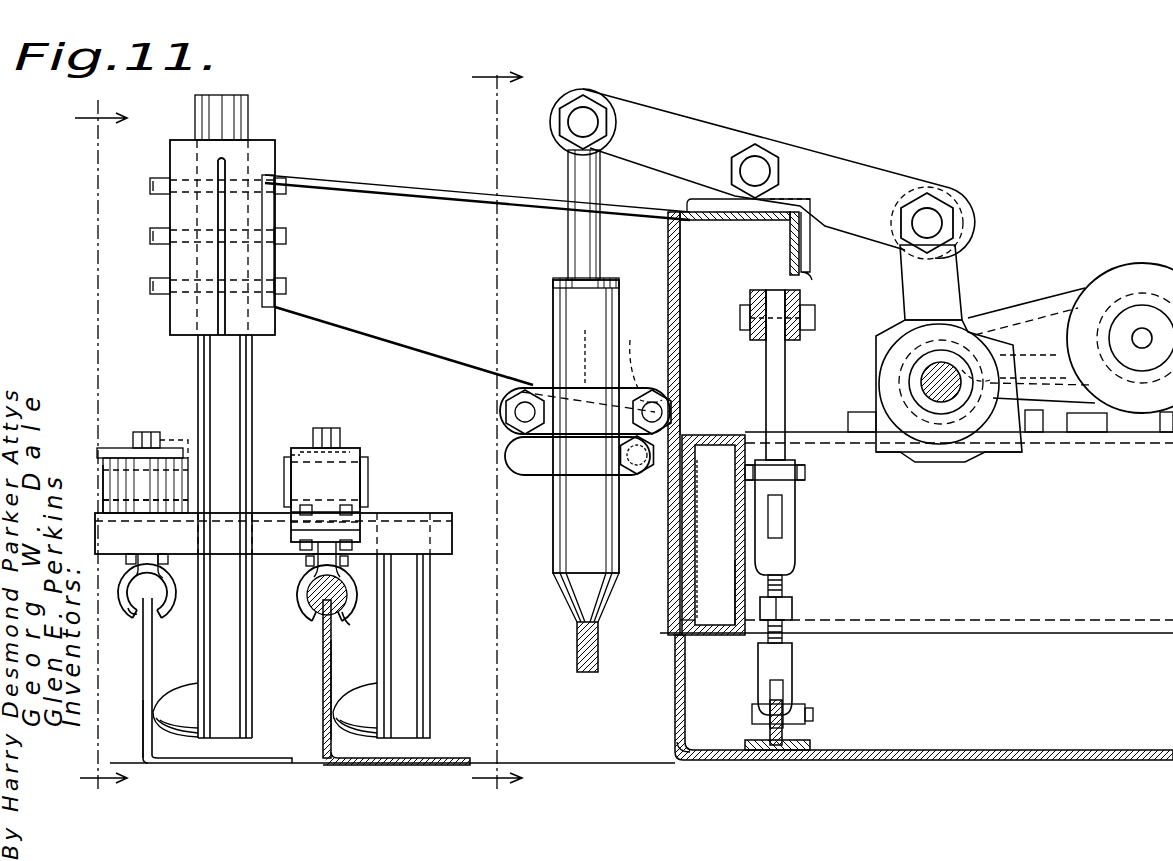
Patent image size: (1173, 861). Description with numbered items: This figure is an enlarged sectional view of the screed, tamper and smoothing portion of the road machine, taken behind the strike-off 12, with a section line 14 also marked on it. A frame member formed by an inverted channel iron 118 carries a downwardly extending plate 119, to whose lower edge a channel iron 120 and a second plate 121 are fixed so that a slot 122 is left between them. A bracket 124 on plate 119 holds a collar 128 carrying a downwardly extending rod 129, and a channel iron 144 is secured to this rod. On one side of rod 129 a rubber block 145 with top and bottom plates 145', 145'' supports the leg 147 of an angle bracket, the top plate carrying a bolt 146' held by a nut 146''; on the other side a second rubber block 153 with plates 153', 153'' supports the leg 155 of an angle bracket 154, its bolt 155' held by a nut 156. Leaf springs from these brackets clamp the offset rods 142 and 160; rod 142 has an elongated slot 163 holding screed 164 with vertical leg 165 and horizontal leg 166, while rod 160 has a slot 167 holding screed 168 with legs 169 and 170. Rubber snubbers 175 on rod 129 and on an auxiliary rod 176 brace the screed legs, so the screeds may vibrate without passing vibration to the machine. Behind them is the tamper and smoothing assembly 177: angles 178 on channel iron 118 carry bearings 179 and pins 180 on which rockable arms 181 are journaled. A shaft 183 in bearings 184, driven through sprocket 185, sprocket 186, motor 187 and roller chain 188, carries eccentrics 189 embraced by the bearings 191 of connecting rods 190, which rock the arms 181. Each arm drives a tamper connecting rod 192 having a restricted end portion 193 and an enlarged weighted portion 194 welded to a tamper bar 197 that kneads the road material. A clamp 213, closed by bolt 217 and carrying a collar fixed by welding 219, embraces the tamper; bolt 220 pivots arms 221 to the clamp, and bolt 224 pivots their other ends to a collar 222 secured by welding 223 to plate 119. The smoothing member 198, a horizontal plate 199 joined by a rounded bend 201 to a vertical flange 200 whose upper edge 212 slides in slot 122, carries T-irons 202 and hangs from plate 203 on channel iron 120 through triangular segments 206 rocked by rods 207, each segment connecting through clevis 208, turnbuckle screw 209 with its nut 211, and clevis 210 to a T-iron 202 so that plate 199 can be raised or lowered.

The strike-off 12 is at (88, 454).
The section line 14 is at (479, 433).
The inverted channel iron 118 is at (700, 210).
The plate 119 is at (680, 335).
The channel iron 120 is at (697, 560).
The second plate 121 is at (668, 528).
The slot 122 is at (688, 540).
The bracket 124 is at (400, 190).
The collar 128 is at (266, 147).
The rod 129 is at (253, 365).
The rod 142 is at (155, 615).
The channel iron 144 is at (258, 545).
The rubber block 145 is at (173, 483).
The top plate 145' is at (113, 462).
The bottom plate 145'' is at (145, 494).
The bolt 146' is at (179, 429).
The nut 146'' is at (151, 409).
The leg 147 is at (183, 452).
The second rubber block 153 is at (388, 481).
The top plate 153' is at (353, 466).
The bottom plate 153'' is at (406, 491).
The angle bracket 154 is at (345, 475).
The leg 155 is at (339, 421).
The bolt 155' is at (276, 436).
The nut 156 is at (312, 440).
The rod 160 is at (302, 612).
The elongated slot 163 is at (130, 614).
The screed 164 is at (132, 678).
The vertical leg 165 is at (141, 690).
The horizontal leg 166 is at (218, 763).
The elongated slot 167 is at (346, 615).
The screed 168 is at (316, 680).
The vertical leg 169 is at (322, 655).
The horizontal leg 170 is at (398, 765).
The rubber snubbers 175 is at (172, 692).
The auxiliary rod 176 is at (430, 622).
The tamper and smoothing assembly 177 is at (525, 327).
The angles 178 is at (805, 245).
The bearing 179 is at (780, 195).
The pin 180 is at (760, 165).
The rockable arm 181 is at (858, 165).
The shaft 183 is at (925, 378).
The bearings 184 is at (860, 410).
The sprocket 185 is at (1005, 362).
The sprocket 186 is at (1072, 376).
The motor 187 is at (1120, 275).
The roller chain 188 is at (1035, 320).
The eccentrics 189 is at (930, 460).
The connecting rod 190 is at (960, 262).
The bearing 191 is at (975, 340).
The tamper connecting rod 192 is at (537, 304).
The restricted end portion 193 is at (578, 232).
The enlarged weighted portion 194 is at (575, 500).
The tamper bar 197 is at (578, 650).
The smoothing member 198 is at (662, 711).
The horizontal plate 199 is at (945, 762).
The flange 200 is at (672, 660).
The rounded bend 201 is at (678, 762).
The T-irons 202 is at (800, 728).
The plate 203 is at (730, 590).
The triangular segments 206 is at (785, 407).
The rocking rods 207 is at (763, 272).
The clevis 208 is at (797, 510).
The turnbuckle screw 209 is at (785, 590).
The clevis 210 is at (795, 668).
The rectangular sectioned nut 211 is at (795, 610).
The upper edge portion 212 is at (680, 612).
The clamp 213 is at (557, 483).
The bolt 217 is at (638, 474).
The welding 219 is at (512, 445).
The bolt 220 is at (518, 408).
The arms 221 is at (588, 388).
The collar 222 is at (636, 350).
The welding 223 is at (672, 395).
The bolt 224 is at (655, 402).